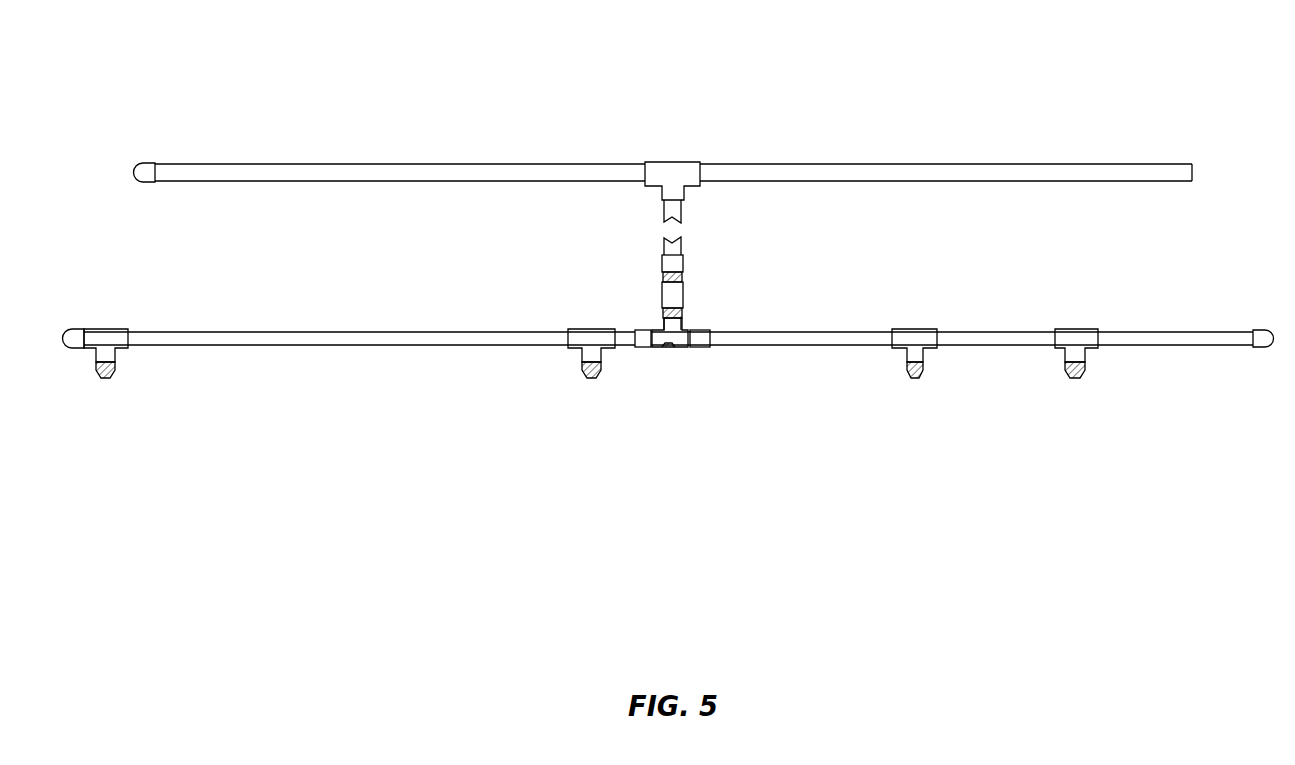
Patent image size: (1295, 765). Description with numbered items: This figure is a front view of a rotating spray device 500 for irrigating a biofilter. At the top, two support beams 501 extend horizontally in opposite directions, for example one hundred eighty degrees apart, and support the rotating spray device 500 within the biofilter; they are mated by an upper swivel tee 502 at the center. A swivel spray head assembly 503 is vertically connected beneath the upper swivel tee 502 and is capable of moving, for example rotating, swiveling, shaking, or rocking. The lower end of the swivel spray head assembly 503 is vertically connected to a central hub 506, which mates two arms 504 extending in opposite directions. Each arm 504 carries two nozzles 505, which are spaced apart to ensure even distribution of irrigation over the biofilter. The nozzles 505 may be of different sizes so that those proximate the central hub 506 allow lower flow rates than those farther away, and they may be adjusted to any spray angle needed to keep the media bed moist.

The rotating spray device 500 is at (668, 343).
The support beam 501 is at (300, 163).
The upper swivel tee 502 is at (668, 162).
The swivel spray head assembly 503 is at (682, 302).
The arm 504 is at (320, 346).
The nozzle 505 is at (105, 378).
The central hub 506 is at (668, 347).